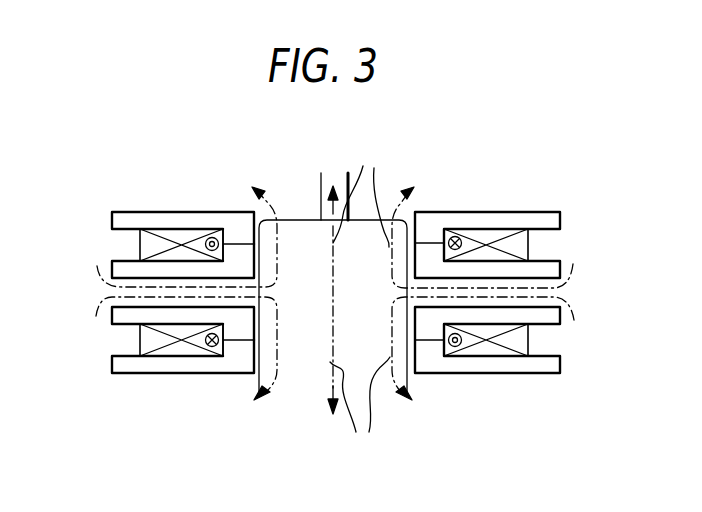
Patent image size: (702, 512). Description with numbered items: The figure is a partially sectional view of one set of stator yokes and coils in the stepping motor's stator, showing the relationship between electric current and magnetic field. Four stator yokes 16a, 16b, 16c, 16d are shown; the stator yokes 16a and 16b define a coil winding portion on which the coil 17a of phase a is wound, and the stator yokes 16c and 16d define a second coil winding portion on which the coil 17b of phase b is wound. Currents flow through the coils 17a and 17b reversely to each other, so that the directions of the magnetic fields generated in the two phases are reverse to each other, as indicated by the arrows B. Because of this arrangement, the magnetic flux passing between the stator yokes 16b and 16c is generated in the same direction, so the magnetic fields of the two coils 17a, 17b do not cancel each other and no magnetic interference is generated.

The stator yoke 16a is at (130, 220).
The stator yoke 16b is at (118, 262).
The stator yoke 16c is at (118, 323).
The stator yoke 16d is at (128, 365).
The coil 17a is at (183, 237).
The coil 17b is at (183, 350).
The arrows indicating magnetic field directions B is at (360, 302).